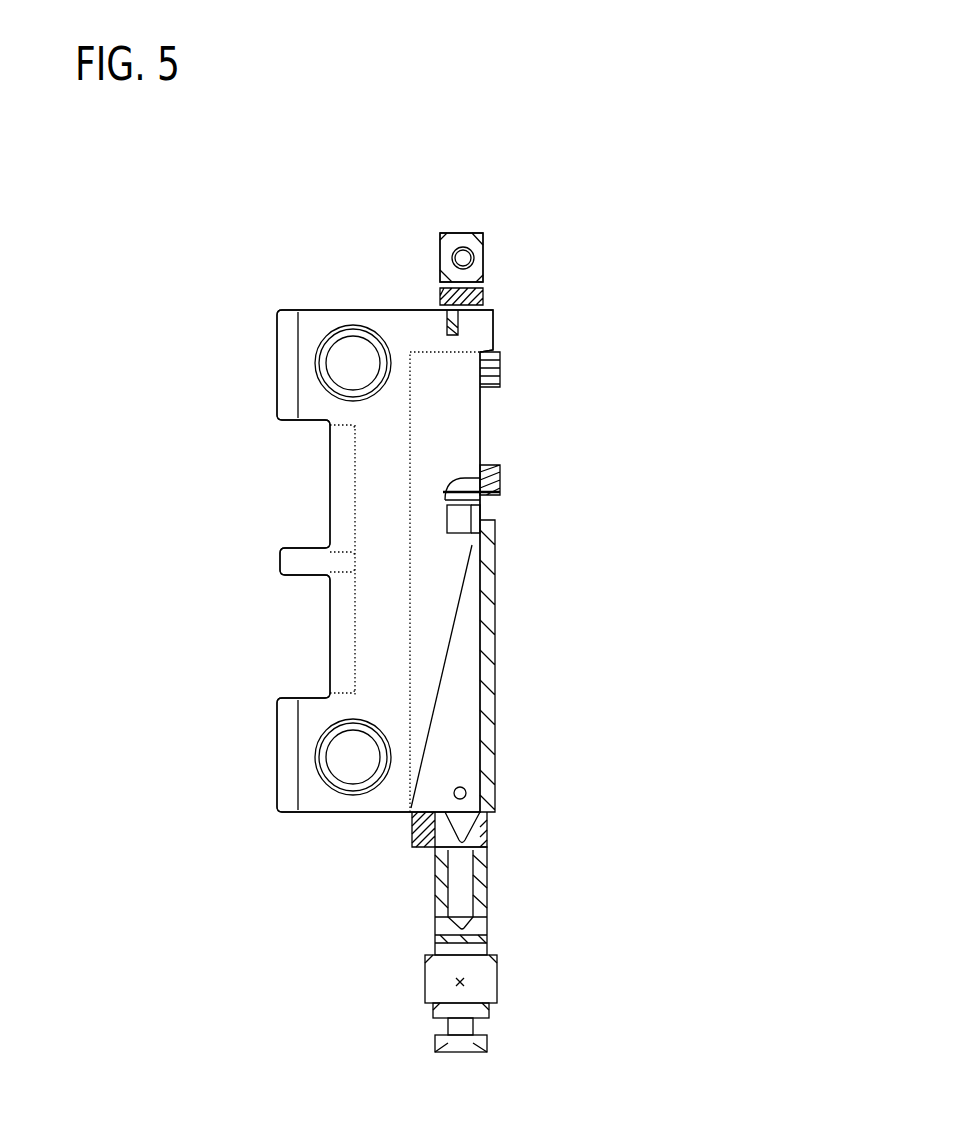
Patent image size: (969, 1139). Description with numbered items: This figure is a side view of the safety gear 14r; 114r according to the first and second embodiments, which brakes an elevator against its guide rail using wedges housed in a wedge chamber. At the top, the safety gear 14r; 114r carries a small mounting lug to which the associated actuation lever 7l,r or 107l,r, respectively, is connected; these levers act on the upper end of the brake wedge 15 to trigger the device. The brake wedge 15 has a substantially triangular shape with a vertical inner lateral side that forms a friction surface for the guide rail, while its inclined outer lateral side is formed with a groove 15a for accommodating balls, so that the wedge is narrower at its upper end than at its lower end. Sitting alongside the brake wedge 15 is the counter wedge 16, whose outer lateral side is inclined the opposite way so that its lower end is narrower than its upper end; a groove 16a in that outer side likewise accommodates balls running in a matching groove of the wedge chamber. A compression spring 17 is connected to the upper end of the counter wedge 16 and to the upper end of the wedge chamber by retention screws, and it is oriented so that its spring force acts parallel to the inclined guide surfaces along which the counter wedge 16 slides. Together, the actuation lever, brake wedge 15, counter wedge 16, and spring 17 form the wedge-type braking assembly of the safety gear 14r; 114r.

The actuation lever 7l,r is at (477, 258).
The actuation lever 107l,r is at (576, 233).
The safety gear 14r is at (558, 347).
The safety gear 114r is at (573, 536).
The compression spring 17 is at (500, 487).
The counter wedge 16 is at (472, 838).
The groove 16a is at (465, 822).
The brake wedge 15 is at (477, 915).
The groove 15a is at (458, 895).